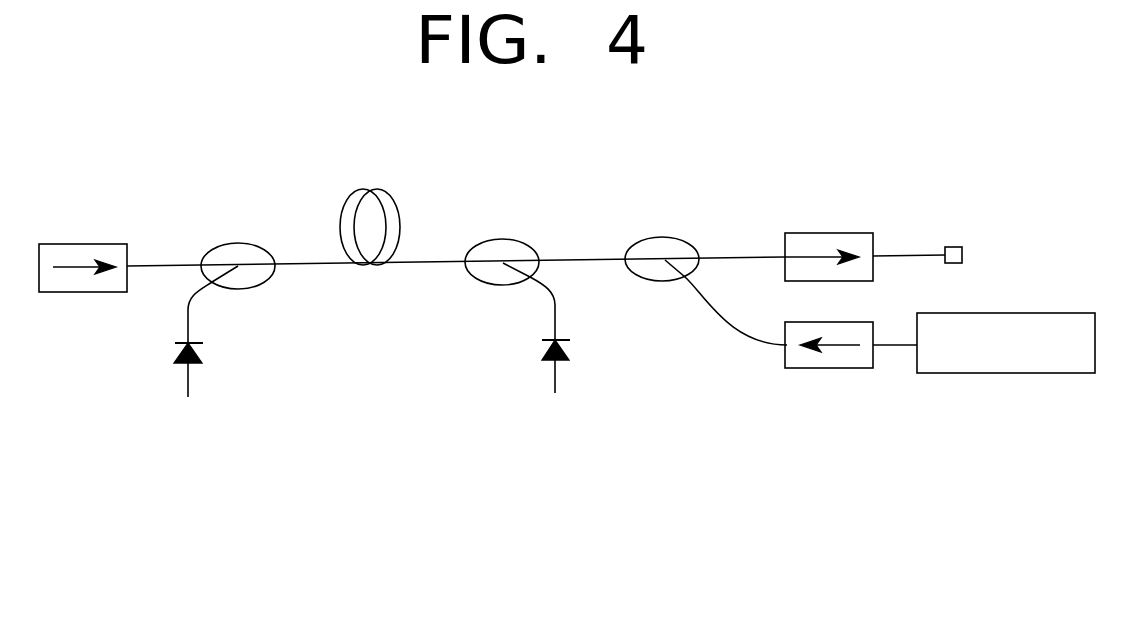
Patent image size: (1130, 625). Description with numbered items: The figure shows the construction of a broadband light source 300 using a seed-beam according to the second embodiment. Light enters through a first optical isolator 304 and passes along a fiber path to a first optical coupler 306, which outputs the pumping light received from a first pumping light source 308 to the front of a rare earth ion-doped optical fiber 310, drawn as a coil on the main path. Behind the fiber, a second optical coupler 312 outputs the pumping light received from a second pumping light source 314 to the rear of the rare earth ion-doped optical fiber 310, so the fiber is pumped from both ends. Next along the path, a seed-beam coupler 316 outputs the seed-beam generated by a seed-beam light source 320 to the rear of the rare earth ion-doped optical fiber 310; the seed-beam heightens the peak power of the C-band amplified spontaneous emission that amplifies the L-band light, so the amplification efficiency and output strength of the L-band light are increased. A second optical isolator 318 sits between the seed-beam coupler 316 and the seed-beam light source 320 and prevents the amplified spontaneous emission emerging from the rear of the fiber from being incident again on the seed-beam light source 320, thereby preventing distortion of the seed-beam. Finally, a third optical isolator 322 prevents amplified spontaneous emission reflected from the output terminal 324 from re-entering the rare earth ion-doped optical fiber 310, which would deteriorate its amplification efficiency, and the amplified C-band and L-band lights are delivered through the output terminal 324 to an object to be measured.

The broadband light source 300 is at (398, 419).
The first optical isolator 304 is at (88, 250).
The first optical coupler 306 is at (233, 248).
The first pumping light source 308 is at (164, 353).
The rare earth ion-doped optical fiber 310 is at (362, 188).
The second optical coupler 312 is at (507, 245).
The second pumping light source 314 is at (580, 349).
The seed-beam coupler 316 is at (675, 248).
The second optical isolator 318 is at (833, 362).
The seed-beam light source 320 is at (1007, 373).
The third optical isolator 322 is at (835, 240).
The output terminal 324 is at (953, 248).